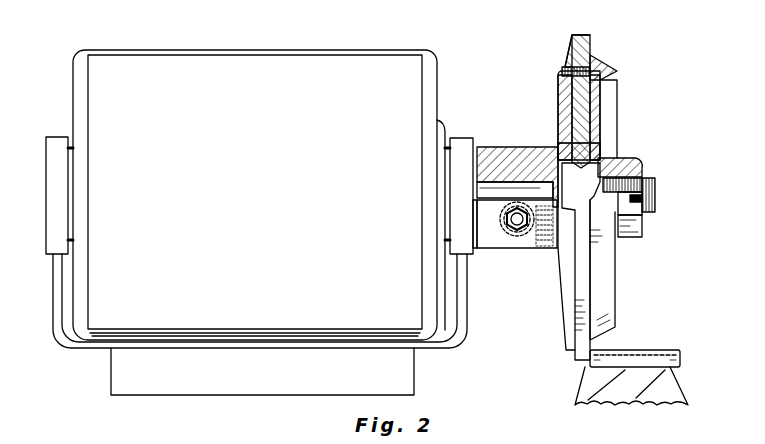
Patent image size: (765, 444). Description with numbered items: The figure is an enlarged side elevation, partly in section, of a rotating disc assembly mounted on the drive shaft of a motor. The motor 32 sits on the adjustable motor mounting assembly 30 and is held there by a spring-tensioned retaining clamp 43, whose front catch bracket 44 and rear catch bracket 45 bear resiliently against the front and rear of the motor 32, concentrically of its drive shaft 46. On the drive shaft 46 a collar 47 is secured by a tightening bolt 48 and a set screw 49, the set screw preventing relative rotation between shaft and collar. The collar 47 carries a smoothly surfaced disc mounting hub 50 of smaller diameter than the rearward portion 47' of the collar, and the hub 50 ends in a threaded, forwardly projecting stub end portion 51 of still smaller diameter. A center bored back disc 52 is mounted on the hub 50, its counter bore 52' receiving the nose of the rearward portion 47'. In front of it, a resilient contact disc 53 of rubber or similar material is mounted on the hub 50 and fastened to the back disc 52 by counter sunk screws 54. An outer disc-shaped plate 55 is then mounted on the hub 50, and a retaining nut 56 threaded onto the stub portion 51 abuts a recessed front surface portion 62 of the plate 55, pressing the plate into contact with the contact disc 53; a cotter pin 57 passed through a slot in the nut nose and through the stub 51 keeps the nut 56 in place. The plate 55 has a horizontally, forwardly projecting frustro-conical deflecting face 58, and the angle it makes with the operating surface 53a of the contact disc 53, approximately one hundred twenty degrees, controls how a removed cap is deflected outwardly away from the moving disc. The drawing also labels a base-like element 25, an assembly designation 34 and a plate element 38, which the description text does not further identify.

The tree trunk 25 is at (585, 385).
The adjustable motor mounting assembly 30 is at (111, 372).
The motor 32 is at (216, 49).
The post assembly 34 is at (567, 46).
The mounting plate 38 is at (681, 355).
The spring-tensioned retaining clamp 43 is at (463, 346).
The front catch bracket 44 is at (462, 138).
The rear catch bracket 45 is at (50, 137).
The drive shaft 46 is at (498, 188).
The collar 47 is at (588, 260).
The rearward portion of the collar 47' is at (517, 159).
The tightening bolt 48 is at (512, 232).
The set screw 49 is at (541, 247).
The disc mounting hub 50 is at (604, 134).
The threaded forwardly projecting stub end portion 51 is at (652, 182).
The center bored back disc 52 is at (560, 117).
The counter bore 52' is at (563, 140).
The resilient contact disc 53 is at (578, 37).
The operating surface 53a is at (591, 44).
The counter sunk screws 54 is at (562, 71).
The outer disc-shaped plate 55 is at (611, 291).
The retaining nut 56 is at (636, 238).
The cotter pin 57 is at (642, 197).
The frustro-conical deflecting face 58 is at (613, 68).
The recessed front surface portion 62 is at (610, 92).